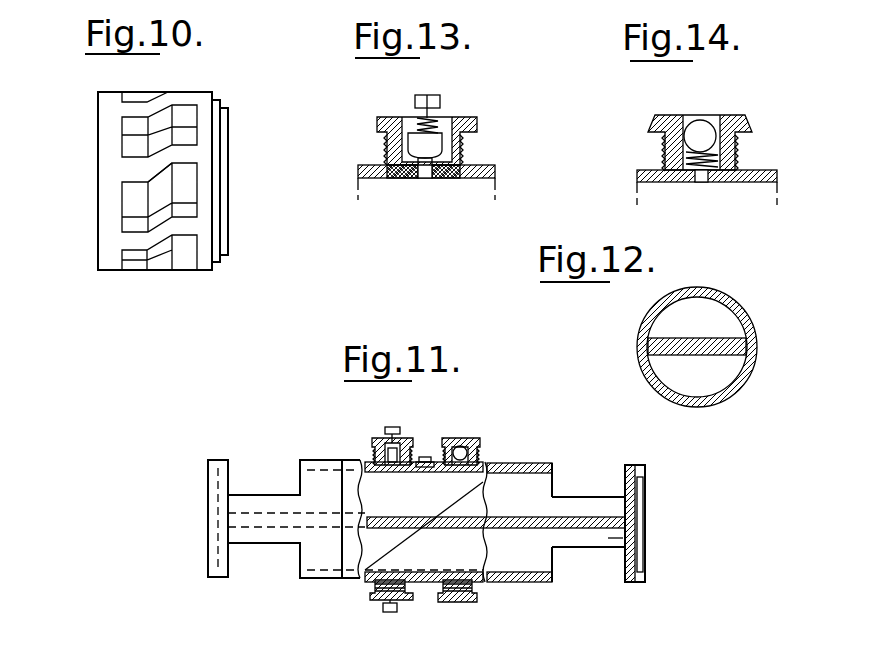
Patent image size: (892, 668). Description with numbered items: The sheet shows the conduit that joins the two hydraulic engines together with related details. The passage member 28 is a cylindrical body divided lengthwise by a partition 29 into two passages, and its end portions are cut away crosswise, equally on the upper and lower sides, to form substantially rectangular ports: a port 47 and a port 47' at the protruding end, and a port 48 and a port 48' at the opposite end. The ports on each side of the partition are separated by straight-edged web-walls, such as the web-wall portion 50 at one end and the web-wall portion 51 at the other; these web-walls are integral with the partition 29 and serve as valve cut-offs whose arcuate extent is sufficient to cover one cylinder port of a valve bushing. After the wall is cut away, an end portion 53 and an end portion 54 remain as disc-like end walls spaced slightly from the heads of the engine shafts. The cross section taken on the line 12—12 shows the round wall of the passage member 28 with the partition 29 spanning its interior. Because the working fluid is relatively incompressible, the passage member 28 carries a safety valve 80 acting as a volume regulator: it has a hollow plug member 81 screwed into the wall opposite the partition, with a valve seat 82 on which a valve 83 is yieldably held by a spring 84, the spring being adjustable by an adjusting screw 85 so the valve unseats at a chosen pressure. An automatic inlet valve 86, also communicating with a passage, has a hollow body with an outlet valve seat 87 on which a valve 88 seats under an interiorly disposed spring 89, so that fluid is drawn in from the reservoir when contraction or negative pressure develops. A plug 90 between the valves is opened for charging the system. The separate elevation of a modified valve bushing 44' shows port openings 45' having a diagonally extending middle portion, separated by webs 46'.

In FIG. 11, the section line 12— 12 is at (321, 442).
In FIG. 13, the passage member 28 is at (492, 167).
In FIG. 12, the passage member 28 is at (740, 312).
In FIG. 11, the passage member 28 is at (506, 463).
In FIG. 12, the partition 29 is at (727, 340).
In FIG. 11, the partition 29 is at (528, 520).
In FIG. 10, the valve bushing 44' is at (139, 181).
In FIG. 10, the port openings 45' is at (123, 181).
In FIG. 10, the separating webs 46' is at (209, 179).
In FIG. 11, the port 47 is at (285, 507).
In FIG. 11, the port 47' is at (264, 570).
In FIG. 11, the port 48 is at (604, 489).
In FIG. 11, the port 48' is at (588, 580).
In FIG. 11, the web-wall portion 50 is at (245, 508).
In FIG. 11, the web-wall portion 51 is at (623, 538).
In FIG. 11, the end portion 53 is at (210, 497).
In FIG. 11, the end portion 54 is at (636, 503).
In FIG. 13, the safety valve 80 is at (520, 135).
In FIG. 11, the safety valve 80 is at (399, 446).
In FIG. 13, the hollow plug member 81 is at (442, 176).
In FIG. 13, the valve seat 82 is at (423, 160).
In FIG. 13, the valve 83 is at (430, 143).
In FIG. 13, the spring 84 is at (405, 115).
In FIG. 13, the adjusting screw 85 is at (428, 96).
In FIG. 14, the automatic inlet valve 86 is at (792, 132).
In FIG. 11, the automatic inlet valve 86 is at (470, 447).
In FIG. 14, the outlet valve seat 87 is at (707, 148).
In FIG. 14, the valve 88 is at (700, 128).
In FIG. 14, the spring 89 is at (702, 171).
In FIG. 11, the plug 90 is at (427, 457).